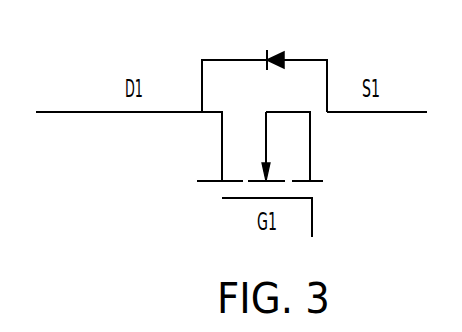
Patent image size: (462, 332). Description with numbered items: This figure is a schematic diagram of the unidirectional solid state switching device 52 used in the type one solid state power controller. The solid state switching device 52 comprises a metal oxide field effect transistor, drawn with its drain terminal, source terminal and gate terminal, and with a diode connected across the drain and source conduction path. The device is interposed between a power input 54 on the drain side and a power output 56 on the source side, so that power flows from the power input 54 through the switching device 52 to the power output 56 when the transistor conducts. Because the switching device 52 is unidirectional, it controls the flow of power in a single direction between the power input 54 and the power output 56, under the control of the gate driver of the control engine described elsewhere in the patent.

The solid state switching device 52 is at (303, 60).
The power input 54 is at (60, 112).
The power output 56 is at (412, 112).